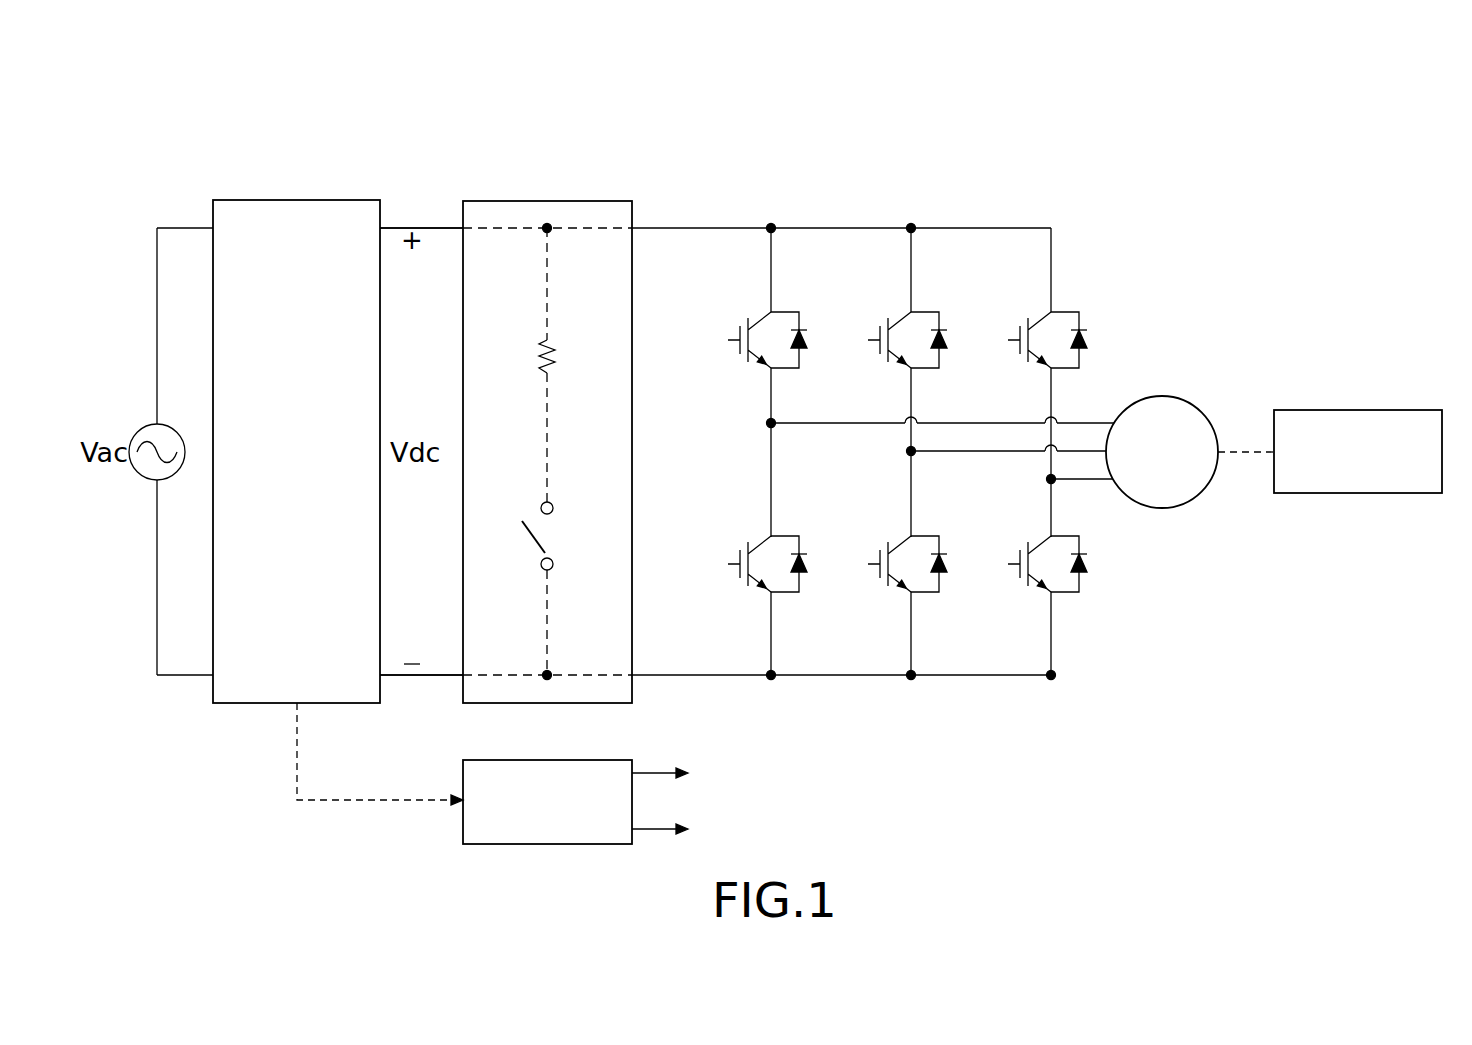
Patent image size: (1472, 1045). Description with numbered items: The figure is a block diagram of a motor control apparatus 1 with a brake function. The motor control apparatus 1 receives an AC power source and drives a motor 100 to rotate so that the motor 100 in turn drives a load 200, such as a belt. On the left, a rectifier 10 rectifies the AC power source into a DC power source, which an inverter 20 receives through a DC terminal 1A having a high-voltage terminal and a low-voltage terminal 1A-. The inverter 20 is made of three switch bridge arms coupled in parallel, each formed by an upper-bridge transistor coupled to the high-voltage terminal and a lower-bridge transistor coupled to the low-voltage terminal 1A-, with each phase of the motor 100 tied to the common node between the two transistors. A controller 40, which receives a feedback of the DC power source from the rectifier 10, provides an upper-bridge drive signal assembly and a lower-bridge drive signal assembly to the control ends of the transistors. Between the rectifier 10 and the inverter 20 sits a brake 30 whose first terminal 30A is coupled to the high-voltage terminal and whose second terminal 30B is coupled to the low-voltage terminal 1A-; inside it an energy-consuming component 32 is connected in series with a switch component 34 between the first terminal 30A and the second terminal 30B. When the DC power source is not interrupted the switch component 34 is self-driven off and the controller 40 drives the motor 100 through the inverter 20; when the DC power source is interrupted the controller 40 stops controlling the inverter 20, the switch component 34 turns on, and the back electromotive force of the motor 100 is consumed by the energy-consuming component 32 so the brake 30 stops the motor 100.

The motor control apparatus 1 is at (779, 87).
The DC terminal 1A is at (389, 186).
The low-voltage terminal 1A- is at (420, 677).
The rectifier 10 is at (297, 205).
The inverter 20 is at (1001, 188).
The brake 30 is at (537, 205).
The first terminal 30A is at (549, 215).
The second terminal 30B is at (549, 690).
The energy-consuming component 32 is at (555, 351).
The switch component 34 is at (549, 536).
The controller 40 is at (545, 765).
The motor 100 is at (1160, 400).
The load 200 is at (1357, 415).